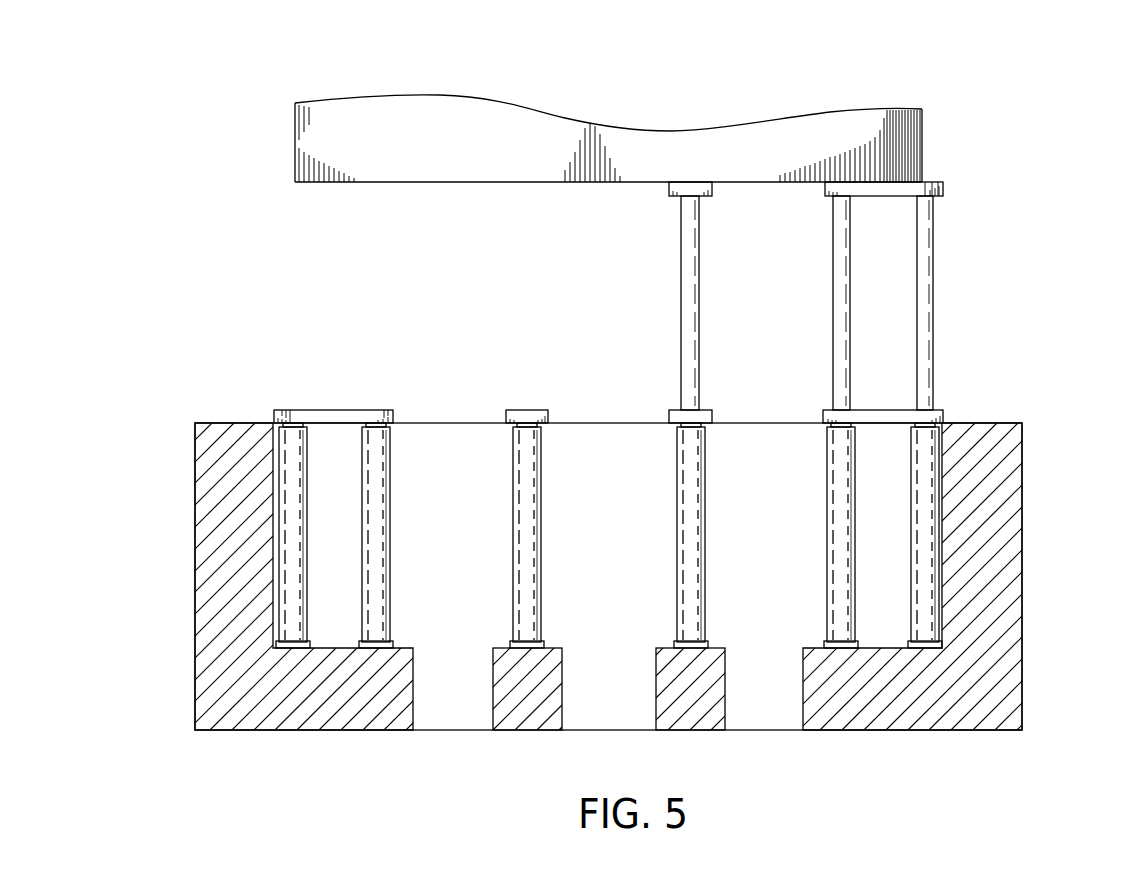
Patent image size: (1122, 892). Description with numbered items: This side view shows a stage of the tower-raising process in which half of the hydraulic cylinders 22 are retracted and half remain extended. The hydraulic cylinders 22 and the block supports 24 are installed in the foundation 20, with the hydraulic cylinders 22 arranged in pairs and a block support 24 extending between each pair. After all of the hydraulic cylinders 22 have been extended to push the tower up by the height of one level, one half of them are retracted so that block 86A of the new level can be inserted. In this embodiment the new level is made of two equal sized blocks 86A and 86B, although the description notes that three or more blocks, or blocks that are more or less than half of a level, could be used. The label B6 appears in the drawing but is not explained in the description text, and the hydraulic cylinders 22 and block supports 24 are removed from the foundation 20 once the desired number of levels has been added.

The foundation 20 is at (1004, 560).
The hydraulic cylinders 22 is at (680, 531).
The block supports 24 is at (821, 193).
The warped plate B6 is at (692, 114).
The block 86A is at (305, 137).
The block 86B is at (900, 141).